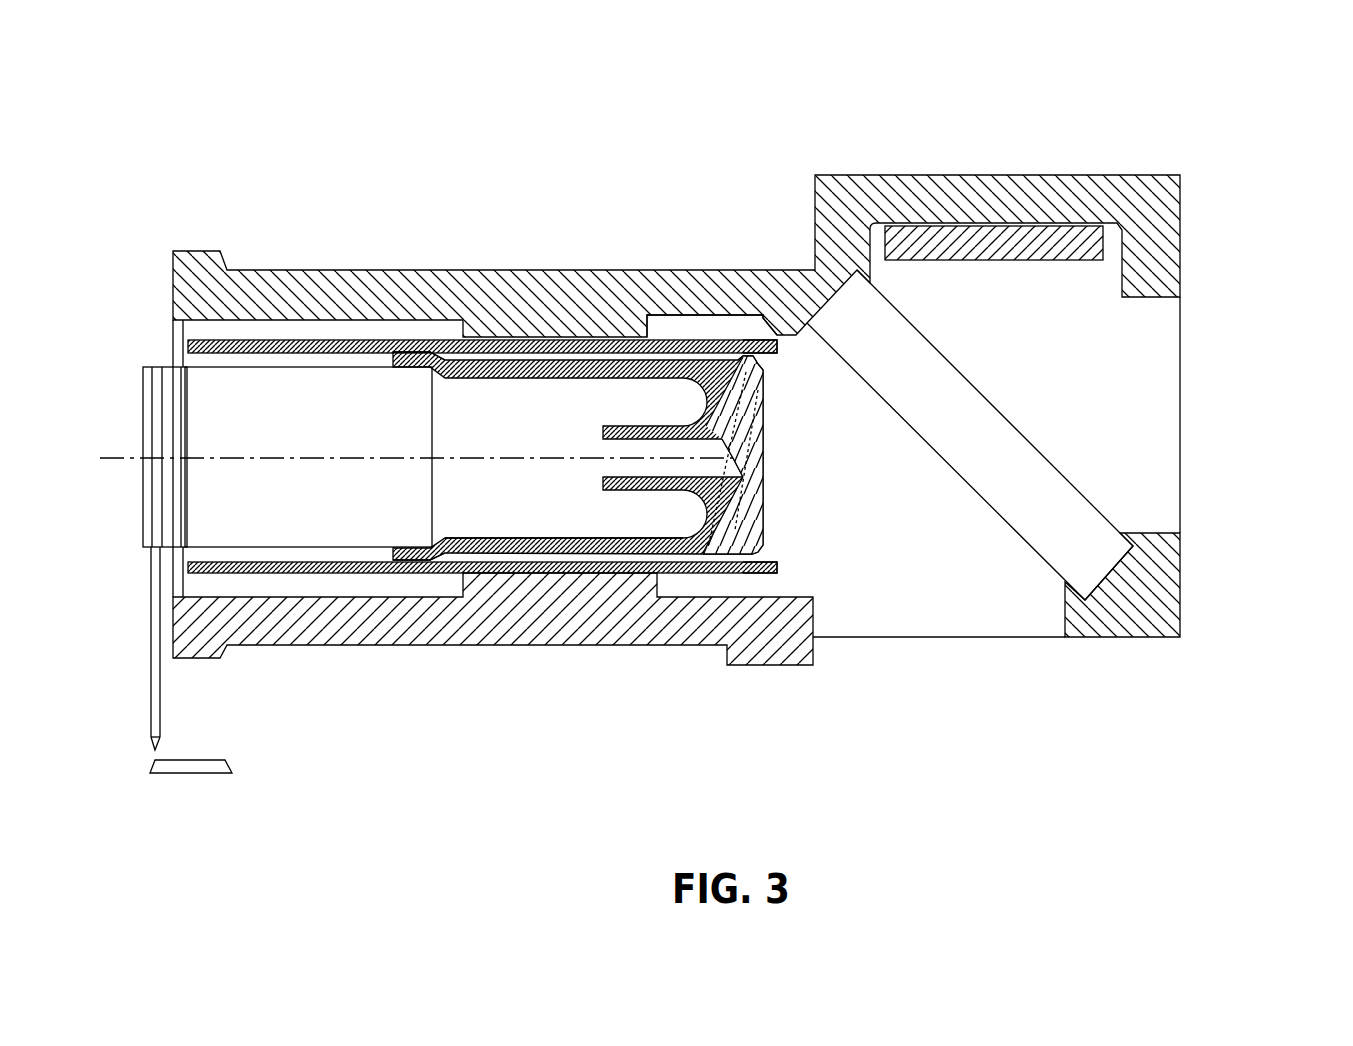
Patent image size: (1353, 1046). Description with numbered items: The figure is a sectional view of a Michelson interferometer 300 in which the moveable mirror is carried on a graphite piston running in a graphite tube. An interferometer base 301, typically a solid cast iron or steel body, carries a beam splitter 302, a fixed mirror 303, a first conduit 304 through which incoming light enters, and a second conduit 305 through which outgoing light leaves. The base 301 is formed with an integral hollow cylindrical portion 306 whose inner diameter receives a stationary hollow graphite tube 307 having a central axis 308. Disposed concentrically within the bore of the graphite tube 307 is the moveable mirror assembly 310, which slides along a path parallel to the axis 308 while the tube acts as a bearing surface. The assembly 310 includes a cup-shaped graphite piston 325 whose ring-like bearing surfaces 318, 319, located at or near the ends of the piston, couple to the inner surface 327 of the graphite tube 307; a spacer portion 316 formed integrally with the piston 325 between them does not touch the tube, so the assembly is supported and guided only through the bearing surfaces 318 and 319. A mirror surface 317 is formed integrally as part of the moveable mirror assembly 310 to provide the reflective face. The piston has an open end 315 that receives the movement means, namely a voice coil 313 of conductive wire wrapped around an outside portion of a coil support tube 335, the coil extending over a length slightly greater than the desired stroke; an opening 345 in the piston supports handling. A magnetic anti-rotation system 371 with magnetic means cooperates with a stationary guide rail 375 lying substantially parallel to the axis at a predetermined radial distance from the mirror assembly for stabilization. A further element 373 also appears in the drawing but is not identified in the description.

The Michelson interferometer 300 is at (692, 460).
The interferometer base 301 is at (745, 446).
The beam splitter 302 is at (995, 454).
The fixed mirror 303 is at (980, 263).
The first conduit 304 is at (1182, 418).
The second conduit 305 is at (915, 648).
The hollow cylindrical portion 306 is at (377, 267).
The stationary hollow graphite tube 307 is at (697, 337).
The central axis 308 is at (550, 452).
The moveable mirror assembly 310 is at (798, 497).
The voice coil 313 is at (165, 494).
The open end 315 is at (390, 556).
The spacer portion 316 is at (577, 468).
The mirror surface 317 is at (767, 440).
The bearing surface 318 is at (744, 343).
The bearing surface 319 is at (402, 340).
The graphite piston 325 is at (603, 466).
The inner surface 327 is at (450, 337).
The coil support tube 335 is at (305, 429).
The opening 345 is at (643, 542).
The magnetic anti-rotation system 371 is at (162, 680).
The fiber end 373 is at (146, 741).
The stationary guide rail 375 is at (190, 777).